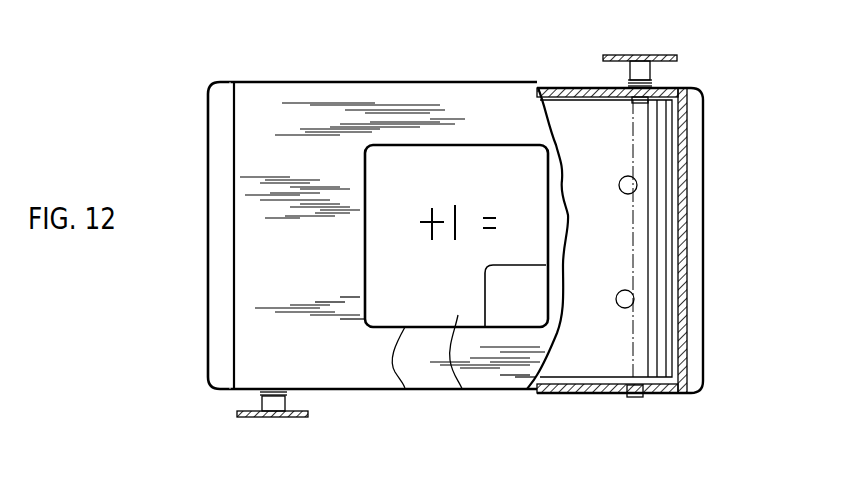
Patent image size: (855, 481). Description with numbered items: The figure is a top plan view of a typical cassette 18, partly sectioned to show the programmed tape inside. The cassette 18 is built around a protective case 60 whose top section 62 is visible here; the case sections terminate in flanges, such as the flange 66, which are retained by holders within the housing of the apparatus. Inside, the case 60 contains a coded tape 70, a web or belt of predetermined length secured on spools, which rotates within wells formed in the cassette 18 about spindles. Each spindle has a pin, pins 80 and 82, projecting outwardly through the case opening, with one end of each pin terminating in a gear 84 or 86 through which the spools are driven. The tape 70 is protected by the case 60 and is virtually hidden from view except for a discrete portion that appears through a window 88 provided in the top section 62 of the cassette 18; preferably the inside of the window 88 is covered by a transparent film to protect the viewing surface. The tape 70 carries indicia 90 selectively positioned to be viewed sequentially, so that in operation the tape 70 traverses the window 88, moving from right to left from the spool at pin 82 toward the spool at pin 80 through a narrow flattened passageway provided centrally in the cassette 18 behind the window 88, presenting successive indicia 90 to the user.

The cassette 18 is at (718, 279).
The protective case 60 is at (505, 390).
The top section 62 is at (313, 358).
The flange 66 is at (212, 300).
The coded tape 70 is at (462, 389).
The pin 80 is at (255, 390).
The pin 82 is at (660, 92).
The gear 84 is at (308, 417).
The gear 86 is at (612, 55).
The window 88 is at (405, 389).
The indicia 90 is at (405, 191).